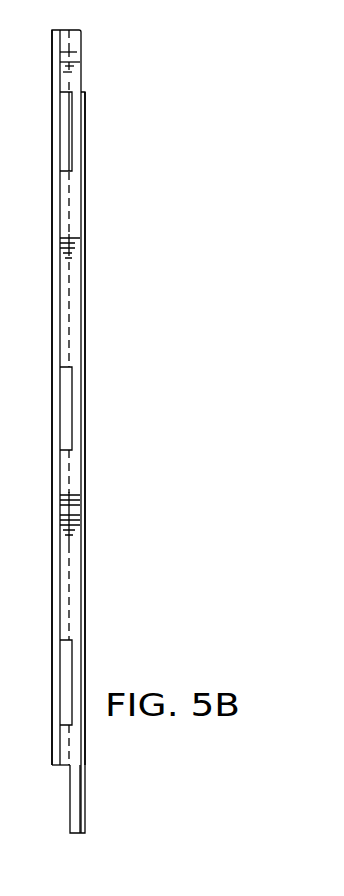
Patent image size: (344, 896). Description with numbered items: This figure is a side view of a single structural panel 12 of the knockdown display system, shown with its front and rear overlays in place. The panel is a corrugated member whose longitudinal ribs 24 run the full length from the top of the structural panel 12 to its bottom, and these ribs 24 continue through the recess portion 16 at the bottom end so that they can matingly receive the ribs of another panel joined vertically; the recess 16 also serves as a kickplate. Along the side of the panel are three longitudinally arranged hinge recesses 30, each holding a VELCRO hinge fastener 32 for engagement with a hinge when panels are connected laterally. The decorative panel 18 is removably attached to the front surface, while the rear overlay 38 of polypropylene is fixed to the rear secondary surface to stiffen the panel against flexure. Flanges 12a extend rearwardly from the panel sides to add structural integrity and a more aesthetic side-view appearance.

The structural panel 12 is at (103, 36).
The flange 12a is at (78, 62).
The recess portion 16 is at (70, 790).
The decorative panel 18 is at (52, 132).
The longitudinal rib 24 is at (70, 561).
The hinge recess 30 is at (63, 102).
The hinge fastener 32 is at (70, 132).
The rear overlay 38 is at (86, 168).